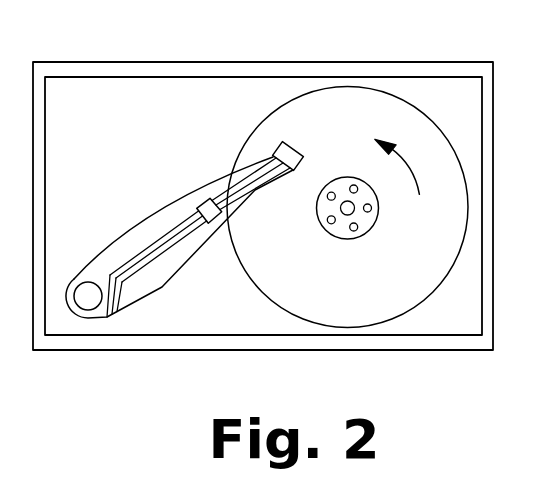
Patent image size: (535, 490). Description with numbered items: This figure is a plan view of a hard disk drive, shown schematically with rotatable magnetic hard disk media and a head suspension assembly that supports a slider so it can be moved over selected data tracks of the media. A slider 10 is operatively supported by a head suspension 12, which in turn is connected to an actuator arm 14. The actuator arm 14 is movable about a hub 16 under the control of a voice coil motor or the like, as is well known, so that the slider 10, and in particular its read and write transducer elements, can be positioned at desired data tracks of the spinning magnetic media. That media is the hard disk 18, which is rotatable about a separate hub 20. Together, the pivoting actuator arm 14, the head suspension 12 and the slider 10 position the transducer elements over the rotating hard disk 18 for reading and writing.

The slider 10 is at (280, 144).
The head suspension 12 is at (243, 204).
The actuator arm 14 is at (113, 232).
The hub 16 is at (95, 300).
The hard disk 18 is at (369, 90).
The hub 20 is at (377, 213).